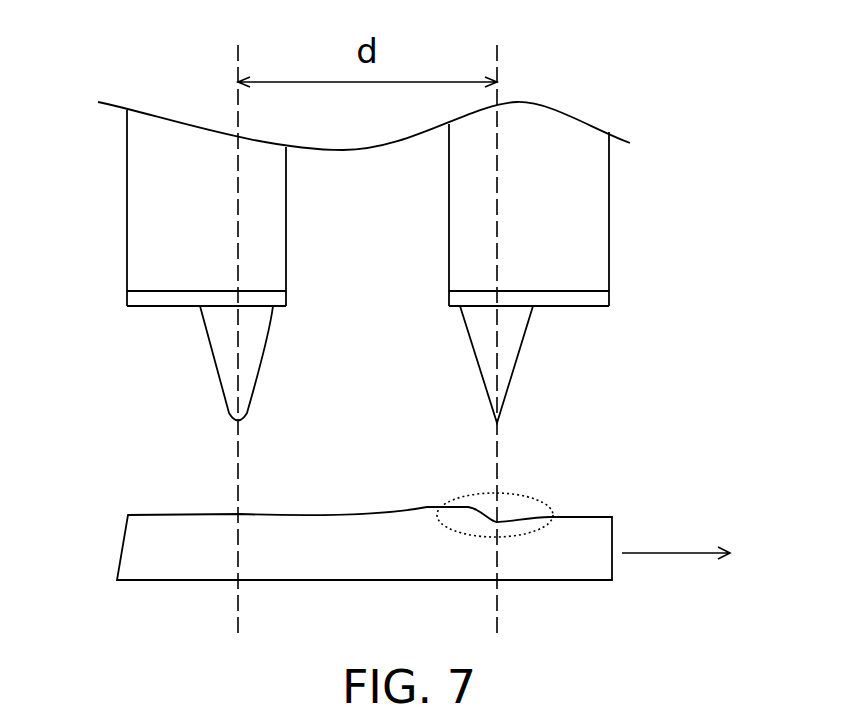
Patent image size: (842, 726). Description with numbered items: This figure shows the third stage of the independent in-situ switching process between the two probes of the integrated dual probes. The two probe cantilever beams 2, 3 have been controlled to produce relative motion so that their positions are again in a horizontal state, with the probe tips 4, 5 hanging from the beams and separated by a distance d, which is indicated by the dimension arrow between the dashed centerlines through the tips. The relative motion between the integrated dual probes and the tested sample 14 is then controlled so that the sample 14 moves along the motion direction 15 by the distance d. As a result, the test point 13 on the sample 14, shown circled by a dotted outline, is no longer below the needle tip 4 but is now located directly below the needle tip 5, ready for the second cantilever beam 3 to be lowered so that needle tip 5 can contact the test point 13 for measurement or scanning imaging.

The probe cantilever beam 2 is at (137, 222).
The probe cantilever beam 3 is at (603, 228).
The probe tip 4 is at (228, 372).
The probe tip 5 is at (510, 346).
The test point 13 is at (475, 501).
The tested sample 14 is at (143, 552).
The motion direction 15 is at (658, 543).